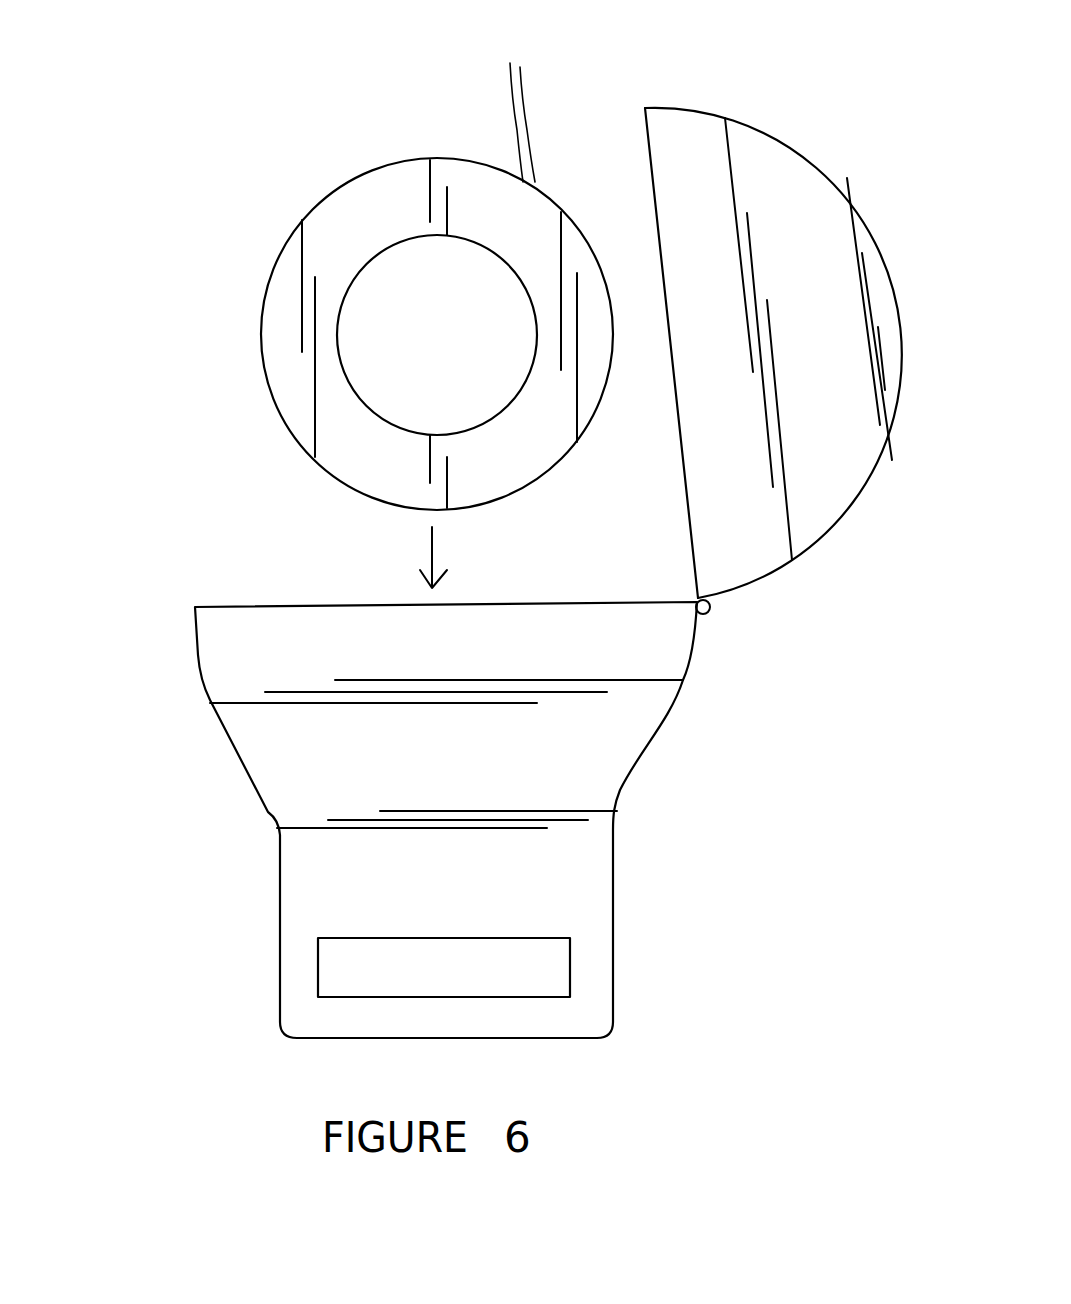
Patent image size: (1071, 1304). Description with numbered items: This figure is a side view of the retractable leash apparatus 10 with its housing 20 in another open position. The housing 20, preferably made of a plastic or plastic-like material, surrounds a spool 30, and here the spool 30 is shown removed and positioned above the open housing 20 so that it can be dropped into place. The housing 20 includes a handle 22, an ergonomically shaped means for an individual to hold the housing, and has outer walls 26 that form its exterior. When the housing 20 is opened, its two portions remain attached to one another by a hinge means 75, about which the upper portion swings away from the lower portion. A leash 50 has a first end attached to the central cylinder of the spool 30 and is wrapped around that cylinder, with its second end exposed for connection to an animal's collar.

The retractable leash apparatus 10 is at (70, 228).
The housing 20 is at (627, 658).
The handle 22 is at (448, 1010).
The outer walls 26 is at (720, 545).
The spool 30 is at (378, 205).
The leash 50 is at (517, 103).
The hinge means 75 is at (708, 613).